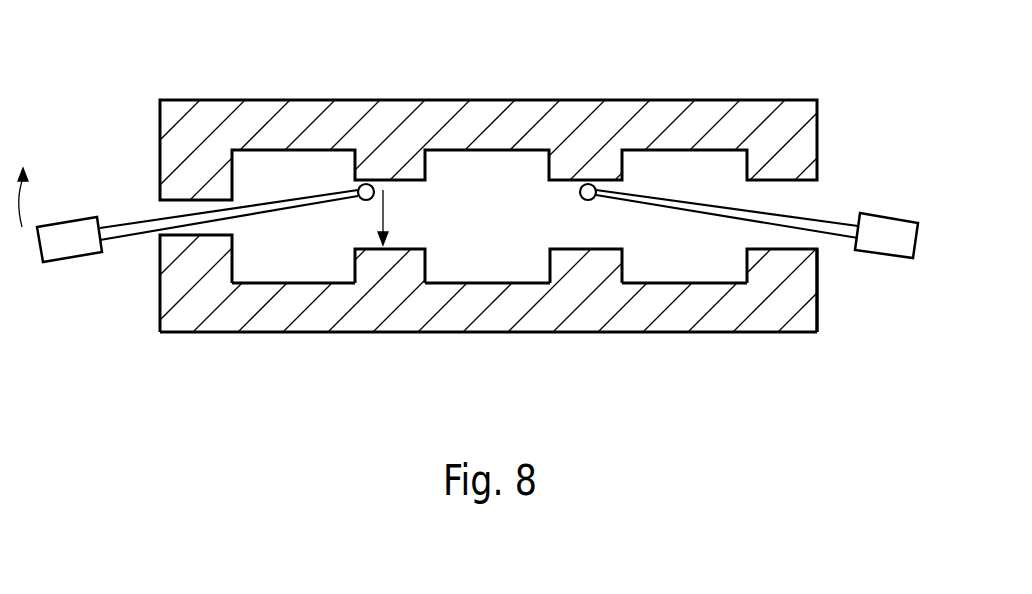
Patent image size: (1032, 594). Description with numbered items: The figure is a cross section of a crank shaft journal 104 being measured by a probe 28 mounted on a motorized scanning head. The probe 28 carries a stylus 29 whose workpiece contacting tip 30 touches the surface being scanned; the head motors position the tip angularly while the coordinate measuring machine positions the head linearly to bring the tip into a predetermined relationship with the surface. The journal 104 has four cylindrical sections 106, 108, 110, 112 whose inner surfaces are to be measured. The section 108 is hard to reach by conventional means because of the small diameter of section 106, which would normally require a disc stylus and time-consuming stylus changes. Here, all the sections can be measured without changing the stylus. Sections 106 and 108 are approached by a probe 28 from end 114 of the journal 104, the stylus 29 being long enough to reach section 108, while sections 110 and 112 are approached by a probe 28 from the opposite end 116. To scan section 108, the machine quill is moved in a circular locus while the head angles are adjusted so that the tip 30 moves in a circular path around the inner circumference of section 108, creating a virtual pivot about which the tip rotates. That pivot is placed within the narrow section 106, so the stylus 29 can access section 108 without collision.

The probe 28 is at (72, 264).
The stylus 29 is at (289, 200).
The workpiece contacting tip 30 is at (363, 201).
The crank shaft journal 104 is at (752, 106).
The cylindrical section 106 is at (182, 243).
The cylindrical section 108 is at (383, 250).
The cylindrical section 110 is at (593, 250).
The cylindrical section 112 is at (771, 250).
The end of crank shaft journal 114 is at (160, 313).
The end of crank shaft journal 116 is at (818, 300).